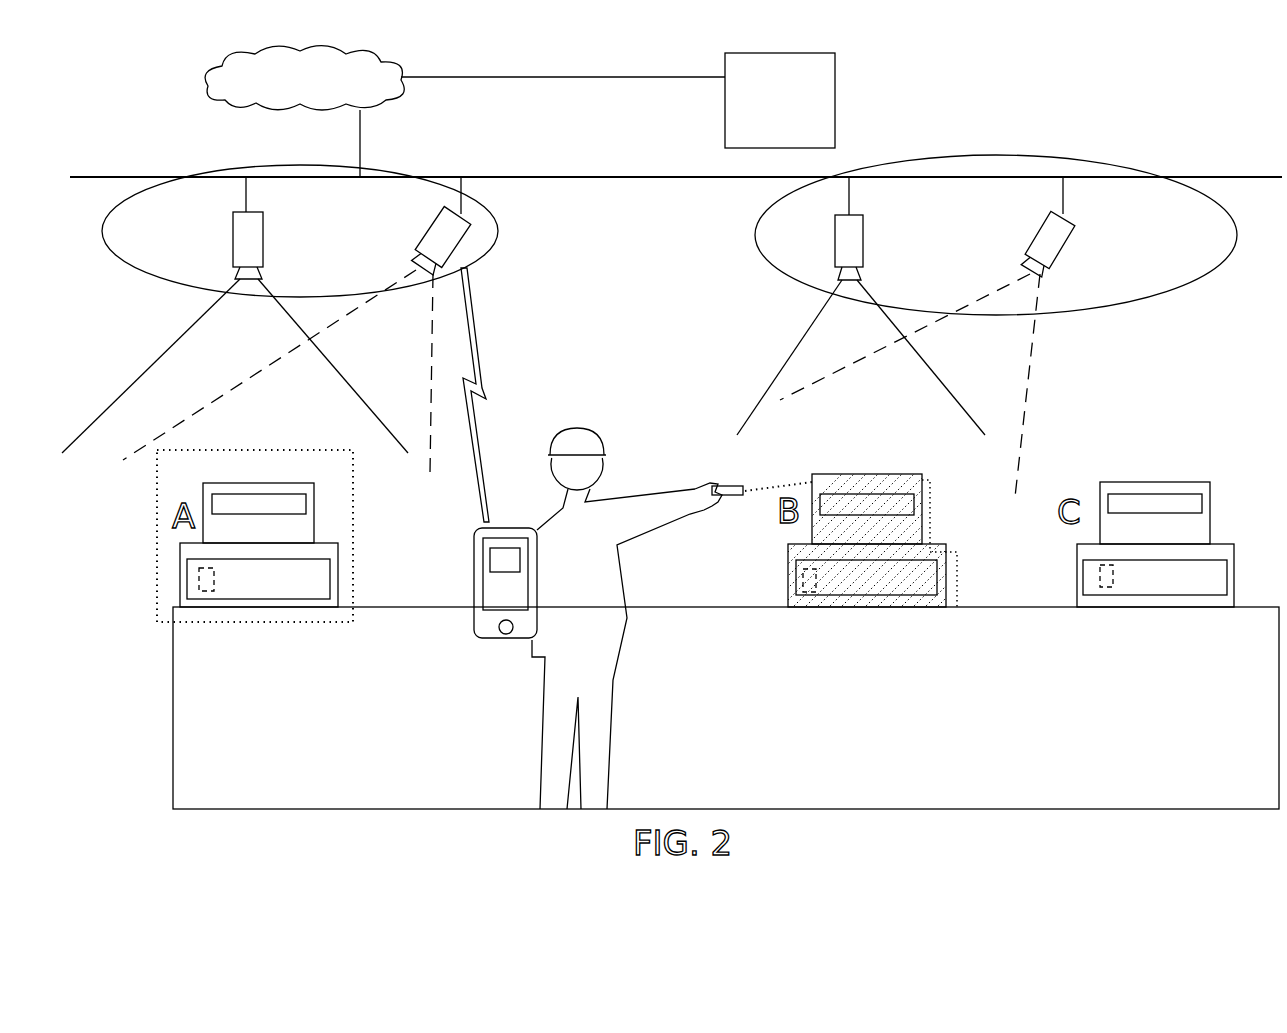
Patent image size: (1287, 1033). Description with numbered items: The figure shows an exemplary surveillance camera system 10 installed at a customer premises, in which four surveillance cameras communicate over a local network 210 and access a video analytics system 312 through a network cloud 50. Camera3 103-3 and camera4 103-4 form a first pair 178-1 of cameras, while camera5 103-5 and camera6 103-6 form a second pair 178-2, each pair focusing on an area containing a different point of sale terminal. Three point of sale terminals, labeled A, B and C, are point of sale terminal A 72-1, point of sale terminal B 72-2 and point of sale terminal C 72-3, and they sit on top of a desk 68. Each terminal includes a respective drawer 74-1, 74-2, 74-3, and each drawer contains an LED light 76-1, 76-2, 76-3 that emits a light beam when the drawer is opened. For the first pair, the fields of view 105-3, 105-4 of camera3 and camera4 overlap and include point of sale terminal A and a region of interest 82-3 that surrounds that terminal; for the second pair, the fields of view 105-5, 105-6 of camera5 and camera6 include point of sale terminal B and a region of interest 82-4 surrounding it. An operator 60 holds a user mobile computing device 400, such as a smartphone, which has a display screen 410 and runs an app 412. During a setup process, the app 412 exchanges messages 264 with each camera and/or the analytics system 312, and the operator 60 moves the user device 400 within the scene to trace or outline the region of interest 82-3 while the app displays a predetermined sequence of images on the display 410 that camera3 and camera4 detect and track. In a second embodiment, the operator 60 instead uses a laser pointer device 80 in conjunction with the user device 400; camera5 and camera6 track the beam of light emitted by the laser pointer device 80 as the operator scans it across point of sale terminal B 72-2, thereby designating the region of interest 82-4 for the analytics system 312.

The surveillance camera system 10 is at (176, 834).
The network cloud 50 is at (384, 89).
The video analytics system 312 is at (767, 138).
The local network 210 is at (600, 177).
The first pair of cameras 178-1 is at (223, 173).
The second pair of cameras 178-2 is at (1078, 155).
The camera3 103-3 is at (233, 263).
The camera4 103-4 is at (428, 222).
The camera5 103-5 is at (863, 246).
The camera6 103-6 is at (1073, 248).
The field of view of camera3 105-3 is at (140, 373).
The field of view of camera4 105-4 is at (273, 339).
The field of view of camera5 105-5 is at (795, 350).
The field of view of camera6 105-6 is at (1042, 367).
The messages 264 is at (478, 357).
The desk 68 is at (173, 727).
The region of interest 82-3 is at (263, 450).
The region of interest 82-4 is at (847, 472).
The point of sale terminal A 72-1 is at (315, 527).
The point of sale terminal B 72-2 is at (922, 498).
The point of sale terminal C 72-3 is at (1160, 480).
The drawer 74-1 is at (313, 575).
The drawer 74-2 is at (872, 590).
The drawer 74-3 is at (1205, 575).
The LED light 76-1 is at (190, 583).
The LED light 76-2 is at (790, 575).
The LED light 76-3 is at (1080, 577).
The operator 60 is at (543, 733).
The laser pointer device 80 is at (720, 485).
The user mobile computing device 400 is at (504, 578).
The display screen 410 is at (503, 583).
The application 412 is at (498, 548).